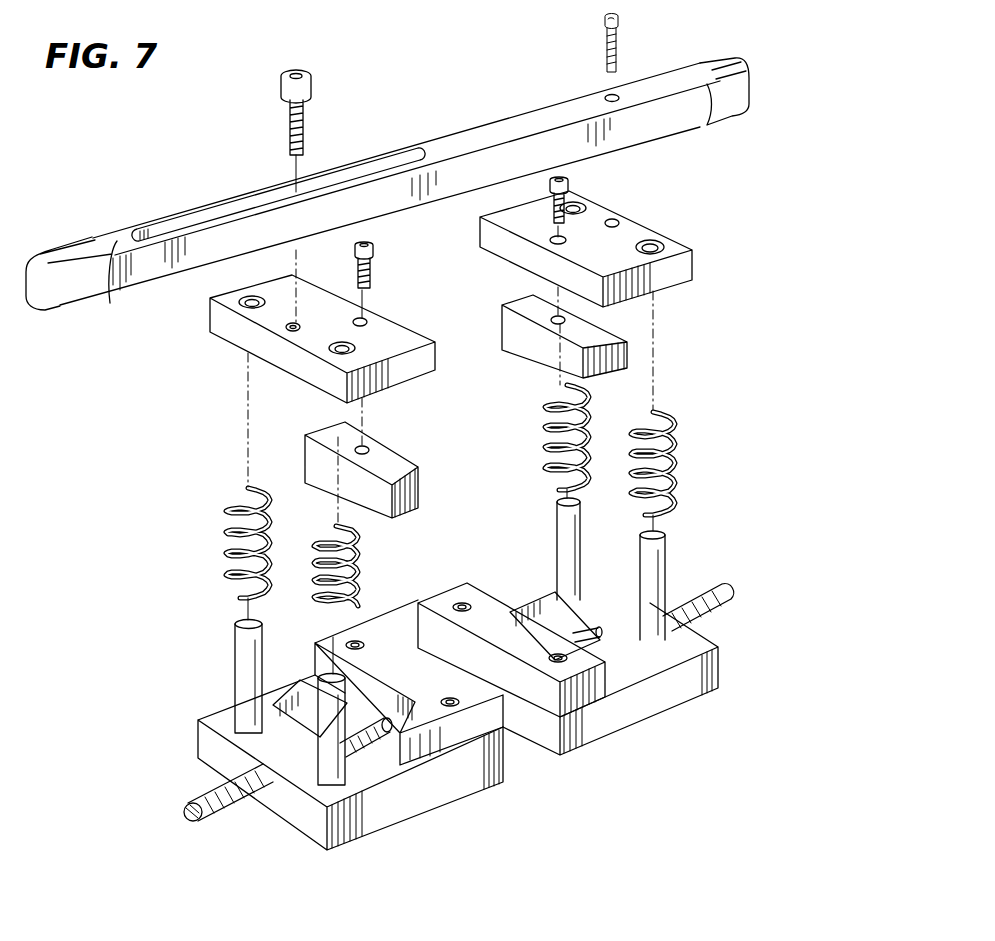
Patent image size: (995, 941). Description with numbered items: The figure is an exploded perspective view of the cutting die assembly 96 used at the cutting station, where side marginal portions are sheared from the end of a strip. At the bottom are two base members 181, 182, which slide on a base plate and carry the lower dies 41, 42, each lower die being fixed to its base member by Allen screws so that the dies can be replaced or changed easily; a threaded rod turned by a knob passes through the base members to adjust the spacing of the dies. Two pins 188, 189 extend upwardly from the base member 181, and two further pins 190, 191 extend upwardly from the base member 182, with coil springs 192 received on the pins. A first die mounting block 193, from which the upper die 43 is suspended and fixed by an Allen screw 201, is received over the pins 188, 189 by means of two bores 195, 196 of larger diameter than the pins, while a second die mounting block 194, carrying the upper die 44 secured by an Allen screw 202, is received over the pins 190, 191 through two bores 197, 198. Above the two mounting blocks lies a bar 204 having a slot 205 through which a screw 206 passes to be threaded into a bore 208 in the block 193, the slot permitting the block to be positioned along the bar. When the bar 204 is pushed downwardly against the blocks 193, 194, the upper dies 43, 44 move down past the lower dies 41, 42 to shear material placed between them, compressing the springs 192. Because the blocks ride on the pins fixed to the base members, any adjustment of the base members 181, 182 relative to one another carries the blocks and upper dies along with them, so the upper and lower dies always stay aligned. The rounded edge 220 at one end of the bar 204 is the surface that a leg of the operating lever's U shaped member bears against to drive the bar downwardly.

The lower die 41 is at (377, 645).
The lower die 42 is at (485, 607).
The upper die 43 is at (412, 492).
The upper die 44 is at (528, 355).
The cutting die assembly 96 is at (697, 413).
The base member 181 is at (285, 802).
The base member 182 is at (652, 703).
The pin 188 is at (242, 655).
The pin 189 is at (342, 767).
The pin 190 is at (562, 532).
The pin 191 is at (667, 567).
The spring 192 is at (225, 538).
The first die mounting block 193 is at (392, 333).
The second die mounting block 194 is at (685, 263).
The bore 195 is at (240, 300).
The bore 196 is at (342, 355).
The bore 197 is at (660, 235).
The bore 198 is at (580, 210).
The Allen screw 201 is at (373, 273).
The Allen screw 202 is at (573, 187).
The bar 204 is at (660, 67).
The slot 205 is at (188, 220).
The screw 206 is at (307, 120).
The bore 208 is at (289, 330).
The rounded edge of bar 220 is at (80, 293).